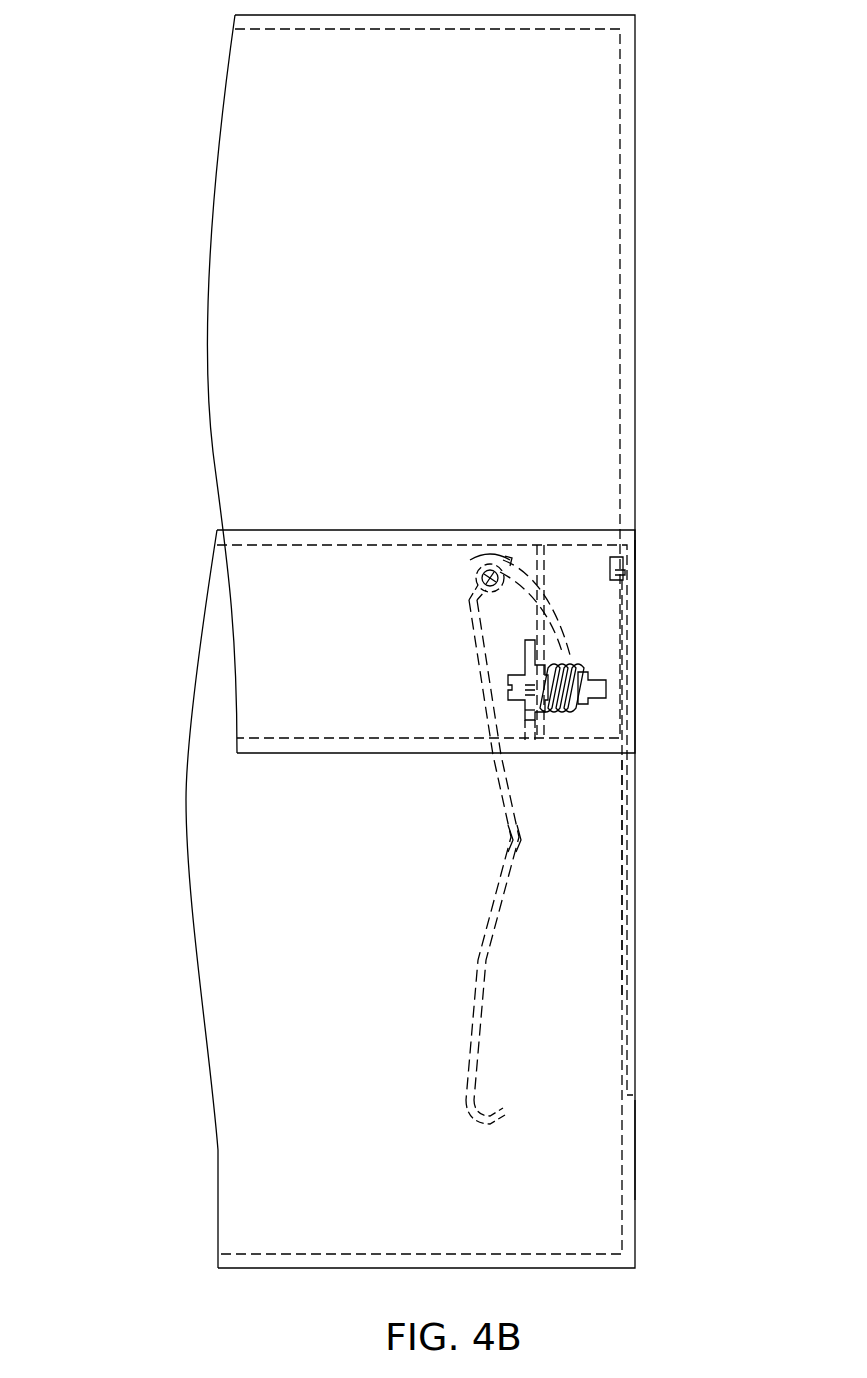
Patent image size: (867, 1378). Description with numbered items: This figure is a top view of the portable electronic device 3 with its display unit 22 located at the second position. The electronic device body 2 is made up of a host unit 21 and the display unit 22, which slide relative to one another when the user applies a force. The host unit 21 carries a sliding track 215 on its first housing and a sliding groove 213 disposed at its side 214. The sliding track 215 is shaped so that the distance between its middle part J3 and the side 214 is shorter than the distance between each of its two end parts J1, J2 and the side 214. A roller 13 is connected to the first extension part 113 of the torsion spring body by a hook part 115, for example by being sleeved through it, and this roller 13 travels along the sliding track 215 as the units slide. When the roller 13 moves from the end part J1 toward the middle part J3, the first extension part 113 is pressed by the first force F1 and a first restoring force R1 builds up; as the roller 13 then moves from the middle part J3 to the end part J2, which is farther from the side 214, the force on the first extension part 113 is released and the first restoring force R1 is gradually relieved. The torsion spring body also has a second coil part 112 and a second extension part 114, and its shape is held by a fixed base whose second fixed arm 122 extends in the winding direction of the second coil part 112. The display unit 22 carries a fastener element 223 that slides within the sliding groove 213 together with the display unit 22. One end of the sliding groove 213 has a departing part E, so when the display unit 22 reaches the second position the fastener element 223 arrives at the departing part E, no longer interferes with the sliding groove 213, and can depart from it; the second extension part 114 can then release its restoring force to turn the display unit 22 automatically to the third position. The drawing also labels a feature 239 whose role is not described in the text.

The portable electronic device 3 is at (168, 88).
The electronic device body 2 is at (120, 448).
The display unit 22 is at (213, 452).
The host unit 21 is at (210, 580).
The sliding groove 213 is at (622, 935).
The side 214 is at (634, 1115).
The second extension part 114 is at (528, 545).
The roller 13 is at (476, 584).
The end part J2 is at (472, 563).
The first restoring force R1 is at (479, 566).
The first force F1 is at (498, 589).
The hook part 115 is at (468, 626).
The sliding track 215 is at (480, 958).
The middle part J3 is at (510, 835).
The end part J1 is at (468, 1110).
The first extension part 113 is at (567, 637).
The second coil part 112 is at (592, 660).
The second fixed arm 122 is at (583, 703).
The positioning post 239 is at (520, 718).
The fastener element 223 is at (633, 572).
The departing part E is at (627, 553).